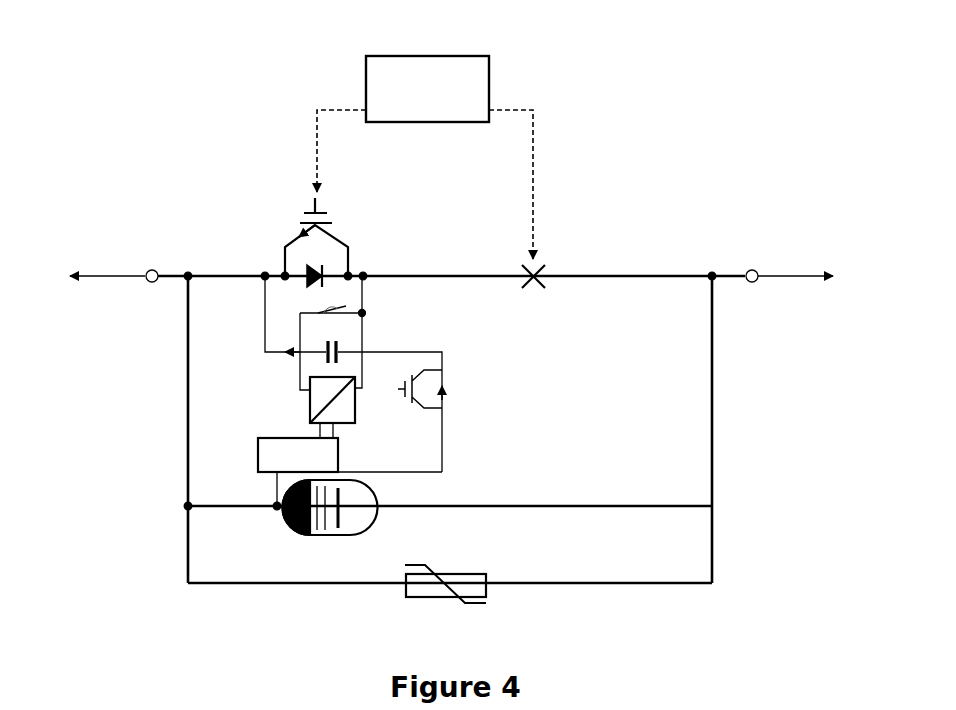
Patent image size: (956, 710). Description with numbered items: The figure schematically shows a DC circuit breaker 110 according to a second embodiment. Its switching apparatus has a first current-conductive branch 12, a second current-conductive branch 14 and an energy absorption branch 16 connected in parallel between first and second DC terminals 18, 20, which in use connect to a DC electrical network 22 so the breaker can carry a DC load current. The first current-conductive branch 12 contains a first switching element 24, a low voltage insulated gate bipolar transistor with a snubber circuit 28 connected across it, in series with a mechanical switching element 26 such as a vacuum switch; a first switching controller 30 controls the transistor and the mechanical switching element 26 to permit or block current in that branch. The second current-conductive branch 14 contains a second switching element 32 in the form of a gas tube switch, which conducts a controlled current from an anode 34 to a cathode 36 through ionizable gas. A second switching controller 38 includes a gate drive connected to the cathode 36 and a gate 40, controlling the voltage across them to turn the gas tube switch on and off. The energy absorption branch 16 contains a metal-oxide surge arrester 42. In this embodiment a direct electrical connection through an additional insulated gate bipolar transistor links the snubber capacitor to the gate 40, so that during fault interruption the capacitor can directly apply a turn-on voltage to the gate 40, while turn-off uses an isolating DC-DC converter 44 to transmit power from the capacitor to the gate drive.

The DC circuit breaker 110 is at (238, 185).
The first current-conductive branch 12 is at (600, 290).
The second current-conductive branch 14 is at (603, 502).
The energy absorption branch 16 is at (618, 582).
The first DC terminal 18 is at (183, 268).
The second DC terminal 20 is at (710, 272).
The DC electrical network 22 is at (451, 277).
The first switching element 24 is at (335, 232).
The mechanical switching element 26 is at (559, 258).
The snubber circuit 28 is at (355, 330).
The first switching controller 30 is at (425, 157).
The second switching element 32 is at (332, 570).
The anode 34 is at (340, 520).
The cathode 36 is at (292, 525).
The second switching controller 38 is at (272, 452).
The gate 40 is at (320, 520).
The metal-oxide surge arrester 42 is at (466, 580).
The isolating DC-DC converter 44 is at (310, 402).